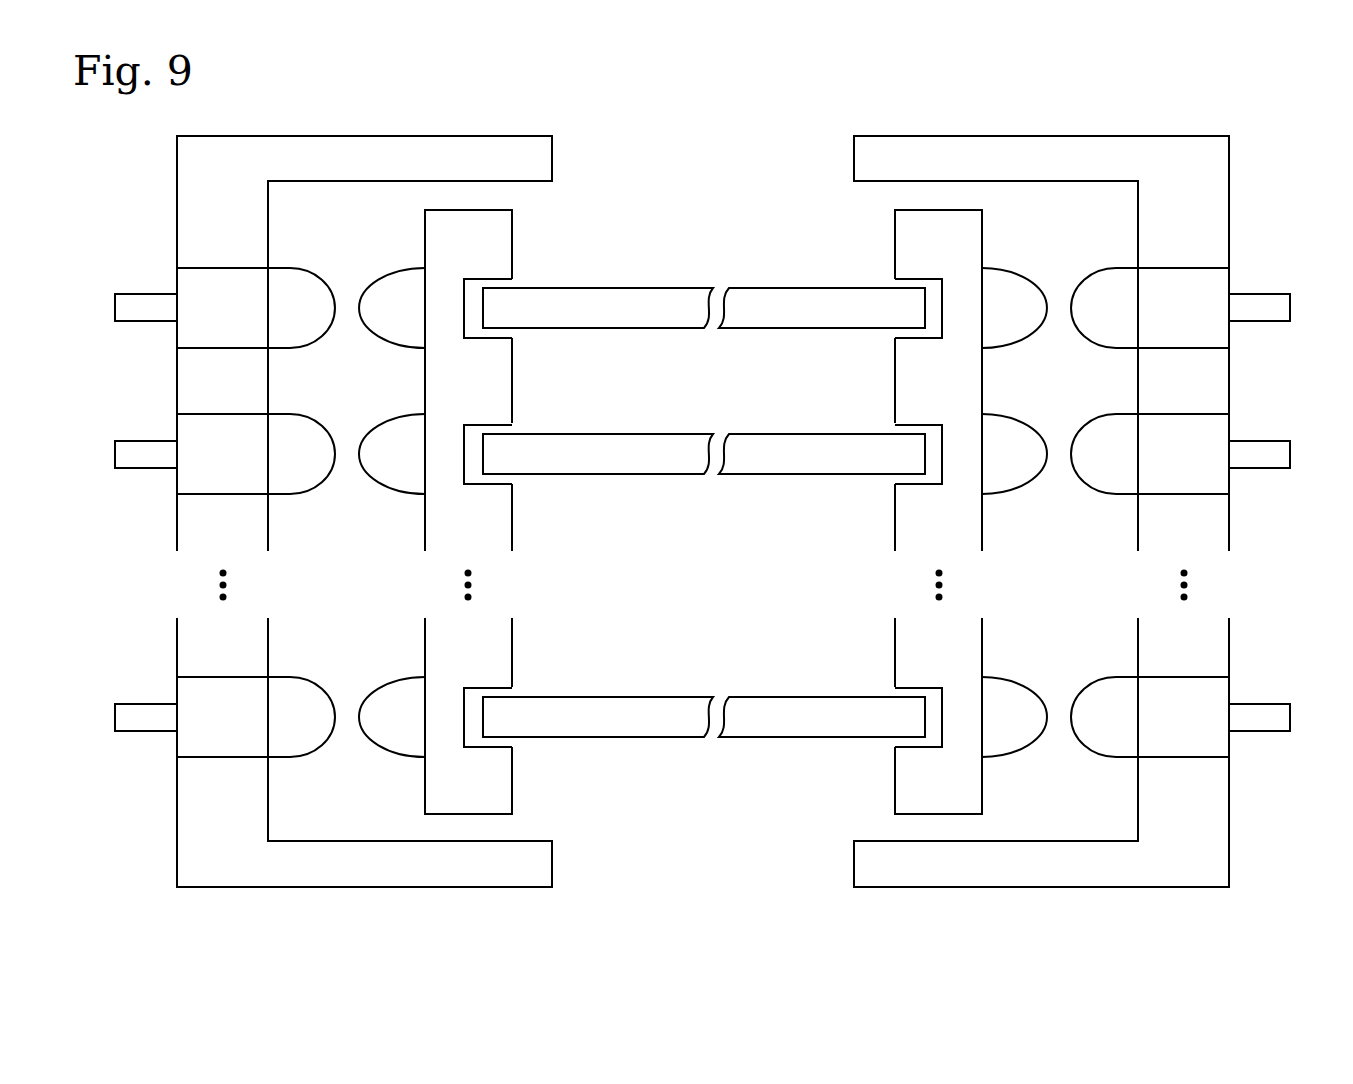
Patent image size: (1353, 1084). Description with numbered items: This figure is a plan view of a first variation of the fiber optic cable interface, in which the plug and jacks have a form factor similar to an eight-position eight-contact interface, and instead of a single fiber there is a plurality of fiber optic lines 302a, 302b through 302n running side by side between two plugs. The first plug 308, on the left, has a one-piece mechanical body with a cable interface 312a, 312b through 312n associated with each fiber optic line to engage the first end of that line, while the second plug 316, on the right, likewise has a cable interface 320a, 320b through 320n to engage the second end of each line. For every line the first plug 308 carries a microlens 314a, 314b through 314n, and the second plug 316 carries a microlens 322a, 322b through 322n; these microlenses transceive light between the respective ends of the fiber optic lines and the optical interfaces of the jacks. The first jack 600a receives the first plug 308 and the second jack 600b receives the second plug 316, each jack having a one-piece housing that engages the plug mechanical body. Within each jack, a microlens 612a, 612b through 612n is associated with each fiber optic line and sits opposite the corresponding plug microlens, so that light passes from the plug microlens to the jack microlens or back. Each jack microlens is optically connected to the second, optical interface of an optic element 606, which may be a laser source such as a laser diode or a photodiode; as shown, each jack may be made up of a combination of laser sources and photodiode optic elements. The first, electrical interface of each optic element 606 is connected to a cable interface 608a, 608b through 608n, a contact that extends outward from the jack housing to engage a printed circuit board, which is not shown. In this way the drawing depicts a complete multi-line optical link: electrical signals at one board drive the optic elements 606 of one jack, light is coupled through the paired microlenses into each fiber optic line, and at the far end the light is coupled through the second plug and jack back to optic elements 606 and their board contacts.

The first jack 600a is at (446, 115).
The second jack 600b is at (957, 115).
The first plug 308 is at (580, 197).
The second plug 316 is at (826, 197).
The cable interface 312a is at (523, 281).
The cable interface 312b is at (523, 427).
The cable interface 312n is at (523, 690).
The cable interface 320a is at (883, 281).
The cable interface 320b is at (883, 427).
The cable interface 320n is at (883, 690).
The fiber optic line 302a is at (770, 288).
The fiber optic line 302b is at (770, 434).
The fiber optic line 302n is at (770, 697).
The microlens 314a is at (426, 321).
The microlens 314b is at (426, 467).
The microlens 314n is at (426, 730).
The microlens 322a is at (1045, 321).
The microlens 322b is at (1045, 467).
The microlens 322n is at (1045, 730).
The microlens 612a is at (332, 321).
The microlens 612b is at (332, 467).
The microlens 612n is at (332, 730).
The optic element 606 is at (246, 321).
The cable interface 608a is at (149, 294).
The cable interface 608b is at (149, 441).
The cable interface 608n is at (149, 704).